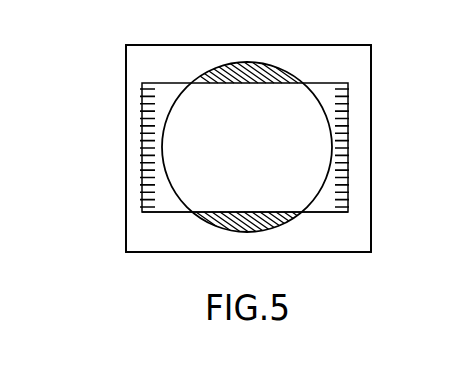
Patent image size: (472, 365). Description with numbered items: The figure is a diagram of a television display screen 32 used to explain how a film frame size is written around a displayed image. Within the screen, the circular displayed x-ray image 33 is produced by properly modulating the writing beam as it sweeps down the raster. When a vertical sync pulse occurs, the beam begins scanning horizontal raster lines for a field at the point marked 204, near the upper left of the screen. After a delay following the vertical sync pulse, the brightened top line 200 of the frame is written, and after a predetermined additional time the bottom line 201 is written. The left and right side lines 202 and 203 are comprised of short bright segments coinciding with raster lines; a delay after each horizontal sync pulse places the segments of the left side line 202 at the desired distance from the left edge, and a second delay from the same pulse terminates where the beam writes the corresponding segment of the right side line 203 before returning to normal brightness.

The television display screen 32 is at (358, 63).
The circular displayed x-ray image 33 is at (243, 66).
The top line of the frame 200 is at (325, 83).
The bottom line of the frame 201 is at (322, 212).
The left side line of the frame 202 is at (147, 143).
The right side line of the frame 203 is at (343, 147).
The starting point of raster scanning 204 is at (140, 63).